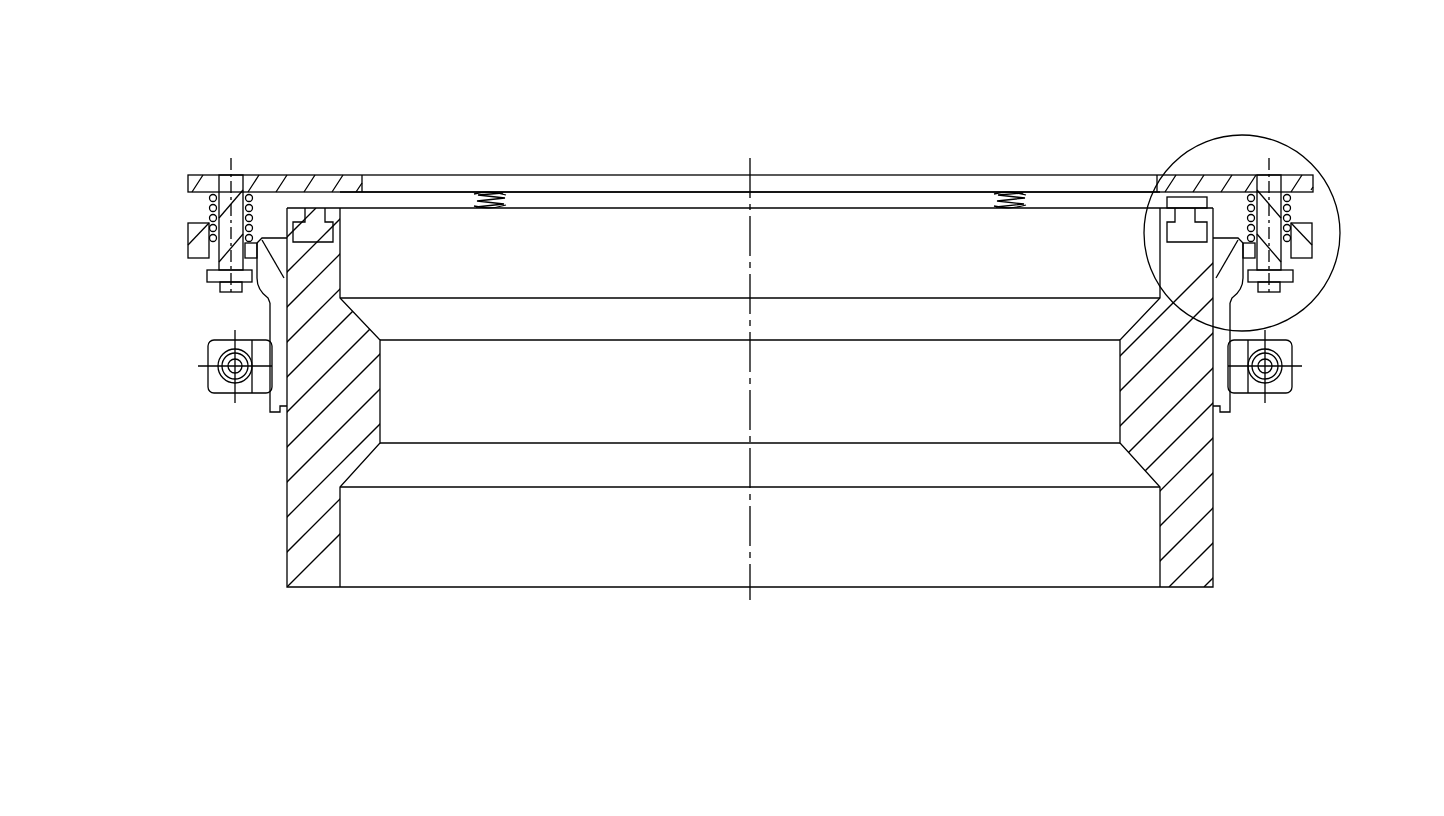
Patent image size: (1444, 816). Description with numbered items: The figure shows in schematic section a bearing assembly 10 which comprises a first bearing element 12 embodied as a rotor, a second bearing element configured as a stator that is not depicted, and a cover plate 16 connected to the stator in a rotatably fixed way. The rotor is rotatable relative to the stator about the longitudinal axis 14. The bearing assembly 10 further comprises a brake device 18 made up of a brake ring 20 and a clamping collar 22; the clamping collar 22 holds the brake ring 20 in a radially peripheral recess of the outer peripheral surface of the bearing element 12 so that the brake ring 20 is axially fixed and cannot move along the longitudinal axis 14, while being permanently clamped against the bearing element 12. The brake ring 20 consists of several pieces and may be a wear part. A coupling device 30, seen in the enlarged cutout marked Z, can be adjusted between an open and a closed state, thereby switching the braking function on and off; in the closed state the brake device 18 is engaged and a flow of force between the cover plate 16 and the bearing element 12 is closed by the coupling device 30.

The bearing assembly 10 is at (1177, 127).
The first bearing element 12 is at (1183, 587).
The longitudinal axis 14 is at (750, 173).
The cover plate 16 is at (777, 185).
The brake device 18 is at (177, 365).
The brake ring 20 is at (272, 412).
The clamping collar 22 is at (210, 343).
The coupling device 30 is at (170, 205).